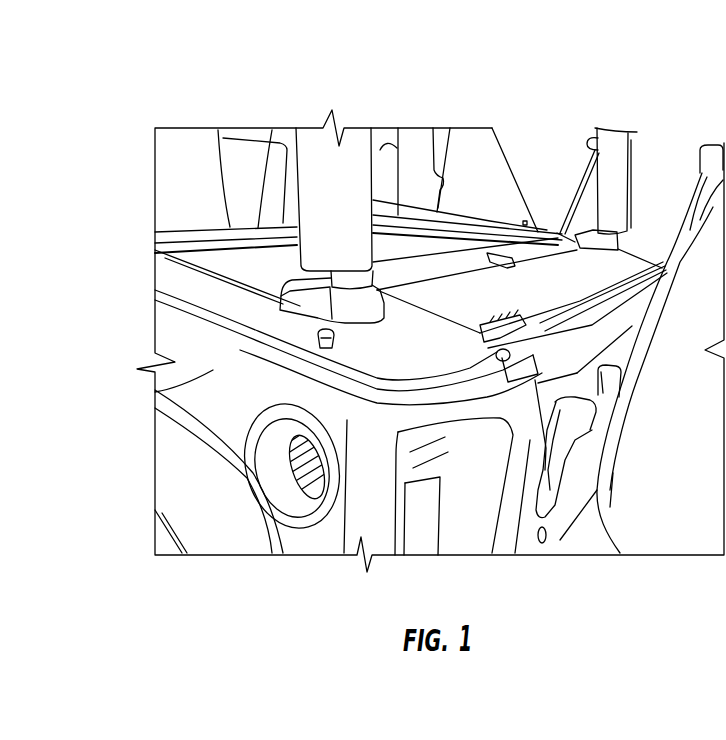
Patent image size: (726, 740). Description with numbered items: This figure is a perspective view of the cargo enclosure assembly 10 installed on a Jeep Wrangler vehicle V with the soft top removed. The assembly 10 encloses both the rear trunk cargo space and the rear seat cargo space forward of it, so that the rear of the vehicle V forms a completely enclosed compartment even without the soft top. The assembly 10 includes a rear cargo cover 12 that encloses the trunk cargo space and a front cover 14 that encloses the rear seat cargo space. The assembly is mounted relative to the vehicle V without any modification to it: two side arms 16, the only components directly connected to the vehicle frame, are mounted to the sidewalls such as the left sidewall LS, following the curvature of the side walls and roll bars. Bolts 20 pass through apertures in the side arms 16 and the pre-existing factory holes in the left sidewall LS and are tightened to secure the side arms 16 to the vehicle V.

The cargo enclosure assembly 10 is at (480, 245).
The rear cargo cover 12 is at (592, 265).
The front cover 14 is at (258, 232).
The side arm 16 is at (403, 343).
The bolt 20 is at (320, 348).
The vehicle V is at (374, 104).
The left sidewall LS is at (213, 370).